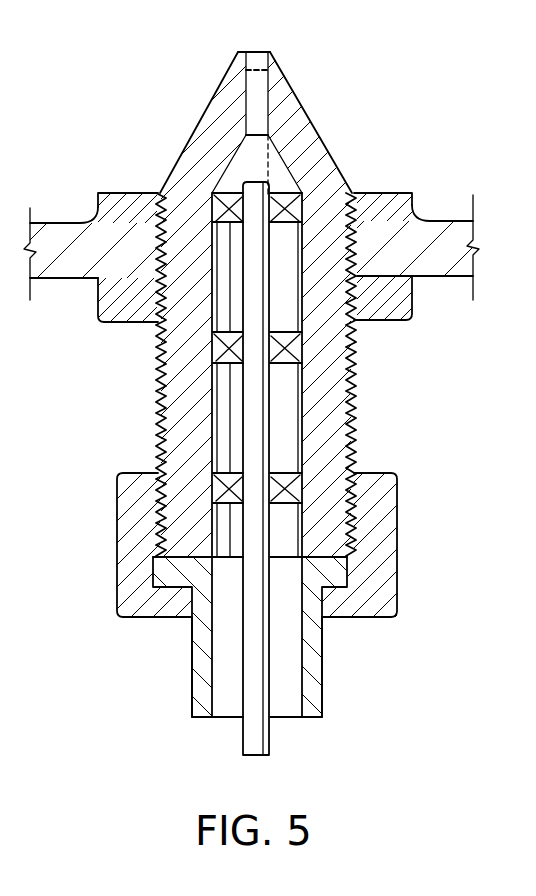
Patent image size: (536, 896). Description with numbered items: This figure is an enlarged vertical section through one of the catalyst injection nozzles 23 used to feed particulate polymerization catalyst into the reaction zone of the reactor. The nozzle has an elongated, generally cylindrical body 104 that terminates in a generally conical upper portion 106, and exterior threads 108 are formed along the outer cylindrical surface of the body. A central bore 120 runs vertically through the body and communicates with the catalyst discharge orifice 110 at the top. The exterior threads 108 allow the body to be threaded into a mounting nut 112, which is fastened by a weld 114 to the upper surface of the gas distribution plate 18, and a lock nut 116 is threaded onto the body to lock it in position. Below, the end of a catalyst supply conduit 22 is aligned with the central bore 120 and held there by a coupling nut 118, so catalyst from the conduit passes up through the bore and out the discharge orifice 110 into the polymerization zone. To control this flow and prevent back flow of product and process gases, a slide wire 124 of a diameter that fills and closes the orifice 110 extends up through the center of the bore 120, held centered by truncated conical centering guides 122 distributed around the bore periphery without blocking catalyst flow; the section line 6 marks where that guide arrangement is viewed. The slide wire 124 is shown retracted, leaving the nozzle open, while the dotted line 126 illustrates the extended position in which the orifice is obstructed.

The catalyst injection nozzle 23 is at (345, 64).
The body 104 is at (332, 348).
The conical upper portion 106 is at (307, 133).
The exterior threads 108 is at (357, 382).
The catalyst discharge orifice 110 is at (255, 57).
The mounting nut 112 is at (397, 193).
The weld 114 is at (95, 220).
The lock nut 116 is at (410, 304).
The coupling nut 118 is at (390, 538).
The central bore 120 is at (294, 664).
The centering guides 122 is at (225, 344).
The slide wire 124 is at (258, 182).
The dotted line 126 is at (250, 84).
The gas distribution plate 18 is at (460, 221).
The catalyst supply conduit 22 is at (322, 683).
The section line 6- 6 is at (462, 445).